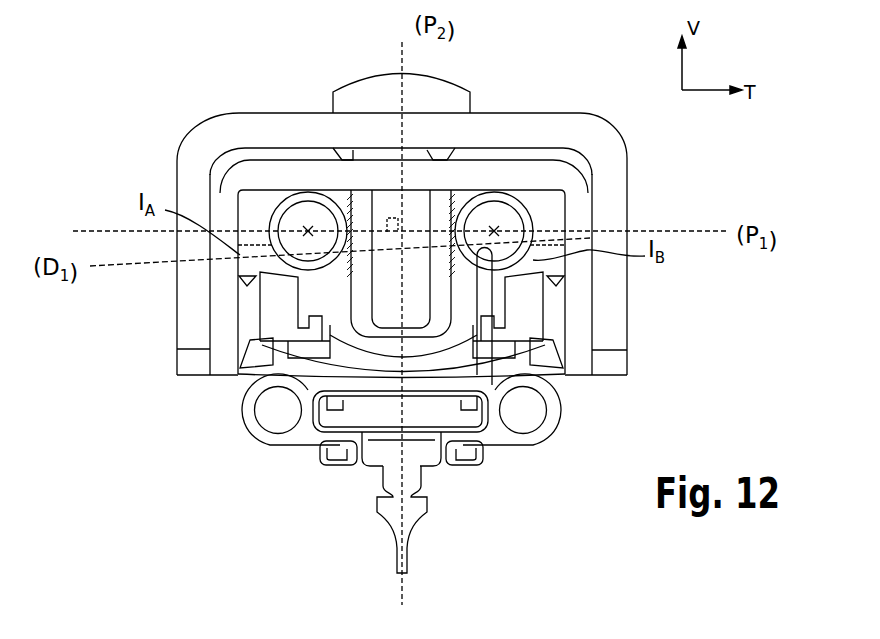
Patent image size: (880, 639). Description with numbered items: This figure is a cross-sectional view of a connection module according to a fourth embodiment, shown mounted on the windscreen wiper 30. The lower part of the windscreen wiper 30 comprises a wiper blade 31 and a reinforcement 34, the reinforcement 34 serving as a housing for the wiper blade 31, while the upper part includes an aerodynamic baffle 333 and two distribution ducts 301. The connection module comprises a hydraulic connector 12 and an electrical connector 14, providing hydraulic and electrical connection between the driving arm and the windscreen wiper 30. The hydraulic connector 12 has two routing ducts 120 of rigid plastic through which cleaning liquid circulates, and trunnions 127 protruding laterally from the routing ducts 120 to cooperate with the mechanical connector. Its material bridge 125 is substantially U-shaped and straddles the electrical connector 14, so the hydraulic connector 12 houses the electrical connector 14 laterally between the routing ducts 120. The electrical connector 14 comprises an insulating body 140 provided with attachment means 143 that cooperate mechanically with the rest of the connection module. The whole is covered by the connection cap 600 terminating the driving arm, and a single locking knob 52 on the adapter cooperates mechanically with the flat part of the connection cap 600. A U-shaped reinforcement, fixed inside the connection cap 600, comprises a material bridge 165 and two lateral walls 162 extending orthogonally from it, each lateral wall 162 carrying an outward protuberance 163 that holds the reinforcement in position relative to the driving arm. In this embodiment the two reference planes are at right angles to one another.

The connection cap 600 is at (182, 133).
The locking knob 52 is at (377, 75).
The material bridge 125 is at (415, 150).
The trunnions 127 is at (253, 208).
The protuberance 163 is at (192, 365).
The hydraulic connector 12 is at (503, 180).
The electrical connector 14 is at (418, 210).
The routing ducts 120 is at (298, 193).
The material bridge 165 is at (311, 175).
The lateral walls 162 is at (222, 280).
The attachment means 143 is at (327, 300).
The aerodynamic baffle 333 is at (471, 365).
The insulating body 140 is at (545, 418).
The distribution ducts 301 is at (255, 432).
The windscreen wiper 30 is at (308, 494).
The reinforcement 34 is at (474, 456).
The wiper blade 31 is at (397, 525).